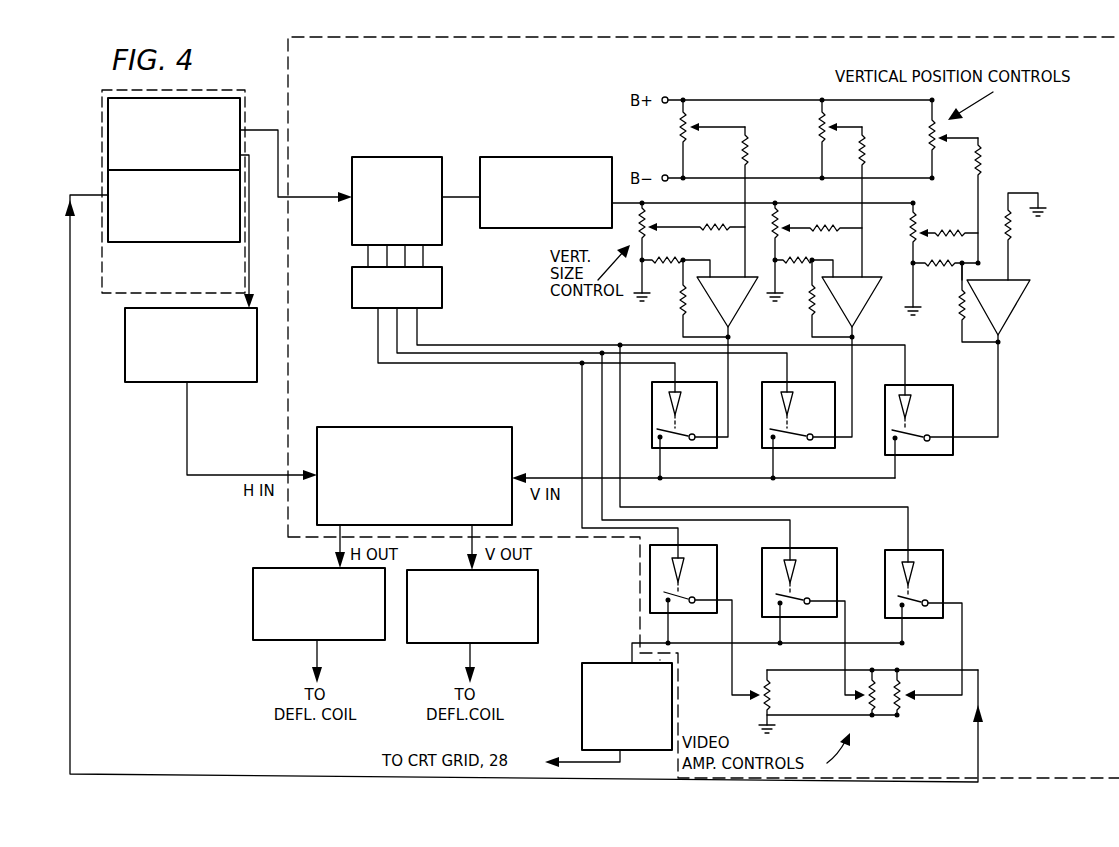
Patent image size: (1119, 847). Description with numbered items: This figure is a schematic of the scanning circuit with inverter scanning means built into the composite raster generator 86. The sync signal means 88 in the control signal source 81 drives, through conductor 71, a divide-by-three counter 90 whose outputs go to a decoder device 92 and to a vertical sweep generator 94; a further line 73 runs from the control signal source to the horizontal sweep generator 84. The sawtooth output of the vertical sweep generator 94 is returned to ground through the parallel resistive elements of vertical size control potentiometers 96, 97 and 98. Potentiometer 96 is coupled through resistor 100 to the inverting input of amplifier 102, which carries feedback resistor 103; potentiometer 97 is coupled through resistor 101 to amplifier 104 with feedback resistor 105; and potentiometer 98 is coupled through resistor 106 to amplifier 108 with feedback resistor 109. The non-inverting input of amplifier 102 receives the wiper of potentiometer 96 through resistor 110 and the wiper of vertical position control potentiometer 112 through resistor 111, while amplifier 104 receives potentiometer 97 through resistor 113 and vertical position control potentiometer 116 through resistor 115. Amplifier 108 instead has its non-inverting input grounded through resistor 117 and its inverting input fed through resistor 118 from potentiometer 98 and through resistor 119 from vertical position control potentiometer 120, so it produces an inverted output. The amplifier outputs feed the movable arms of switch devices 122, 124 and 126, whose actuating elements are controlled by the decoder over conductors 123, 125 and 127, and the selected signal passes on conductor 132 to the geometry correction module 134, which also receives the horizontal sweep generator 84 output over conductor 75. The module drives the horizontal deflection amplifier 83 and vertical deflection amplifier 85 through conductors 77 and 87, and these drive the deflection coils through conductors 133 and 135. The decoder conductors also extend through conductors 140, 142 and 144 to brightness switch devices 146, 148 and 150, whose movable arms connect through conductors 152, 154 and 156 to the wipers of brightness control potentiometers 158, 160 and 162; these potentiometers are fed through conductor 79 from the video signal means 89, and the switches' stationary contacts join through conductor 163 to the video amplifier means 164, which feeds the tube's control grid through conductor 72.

The conductor 71 is at (278, 134).
The conductor 72 is at (577, 762).
The sync signal line to horizontal sweep generator 73 is at (250, 276).
The conductor 75 is at (188, 438).
The conductor 77 is at (331, 538).
The conductor 79 is at (72, 453).
The control signal source 81 is at (120, 296).
The horizontal deflection amplifier 83 is at (253, 575).
The horizontal sweep generator 84 is at (147, 382).
The vertical deflection amplifier 85 is at (538, 578).
The composite raster generator 86 is at (703, 407).
The conductor 87 is at (465, 540).
The sync signal means 88 is at (108, 118).
The video signal means 89 is at (108, 188).
The divide-by-three counter 90 is at (428, 157).
The decoder device 92 is at (445, 272).
The vertical sweep generator 94 is at (604, 158).
The vertical size control potentiometer 96 is at (648, 222).
The vertical size control potentiometer 97 is at (781, 223).
The vertical size control potentiometer 98 is at (918, 230).
The resistor 100 is at (662, 272).
The resistor 101 is at (794, 272).
The amplifier 102 is at (737, 314).
The resistor 103 is at (690, 310).
The amplifier 104 is at (861, 314).
The resistor 105 is at (816, 310).
The resistor 106 is at (951, 272).
The amplifier 108 is at (1007, 318).
The resistor 109 is at (956, 312).
The resistor 110 is at (713, 233).
The resistor 111 is at (749, 150).
The vertical position control potentiometer 112 is at (682, 128).
The resistor 113 is at (837, 234).
The resistor 115 is at (866, 150).
The vertical position control potentiometer 116 is at (819, 136).
The resistor 117 is at (1013, 234).
The resistor 118 is at (963, 243).
The resistor 119 is at (982, 152).
The vertical position control potentiometer 120 is at (930, 139).
The switch device 122 is at (708, 450).
The conductor 123 is at (532, 360).
The switch device 124 is at (826, 450).
The conductor 125 is at (490, 351).
The switch device 126 is at (946, 455).
The conductor 127 is at (448, 344).
The conductor 132 is at (555, 473).
The conductor 133 is at (322, 674).
The geometry correction module 134 is at (508, 427).
The conductor 135 is at (478, 677).
The electrical conductor 140 is at (679, 536).
The electrical conductor 142 is at (791, 527).
The electrical conductor 144 is at (909, 511).
The brightness switch device 146 is at (717, 546).
The brightness switch device 148 is at (831, 549).
The brightness switch device 150 is at (939, 551).
The electrical conductor 152 is at (720, 599).
The electrical conductor 154 is at (846, 616).
The electrical conductor 156 is at (952, 603).
The brightness control potentiometer 158 is at (783, 701).
The brightness control potentiometer 160 is at (862, 707).
The brightness control potentiometer 162 is at (904, 708).
The electrical conductor 163 is at (640, 653).
The video amplifier means 164 is at (582, 686).